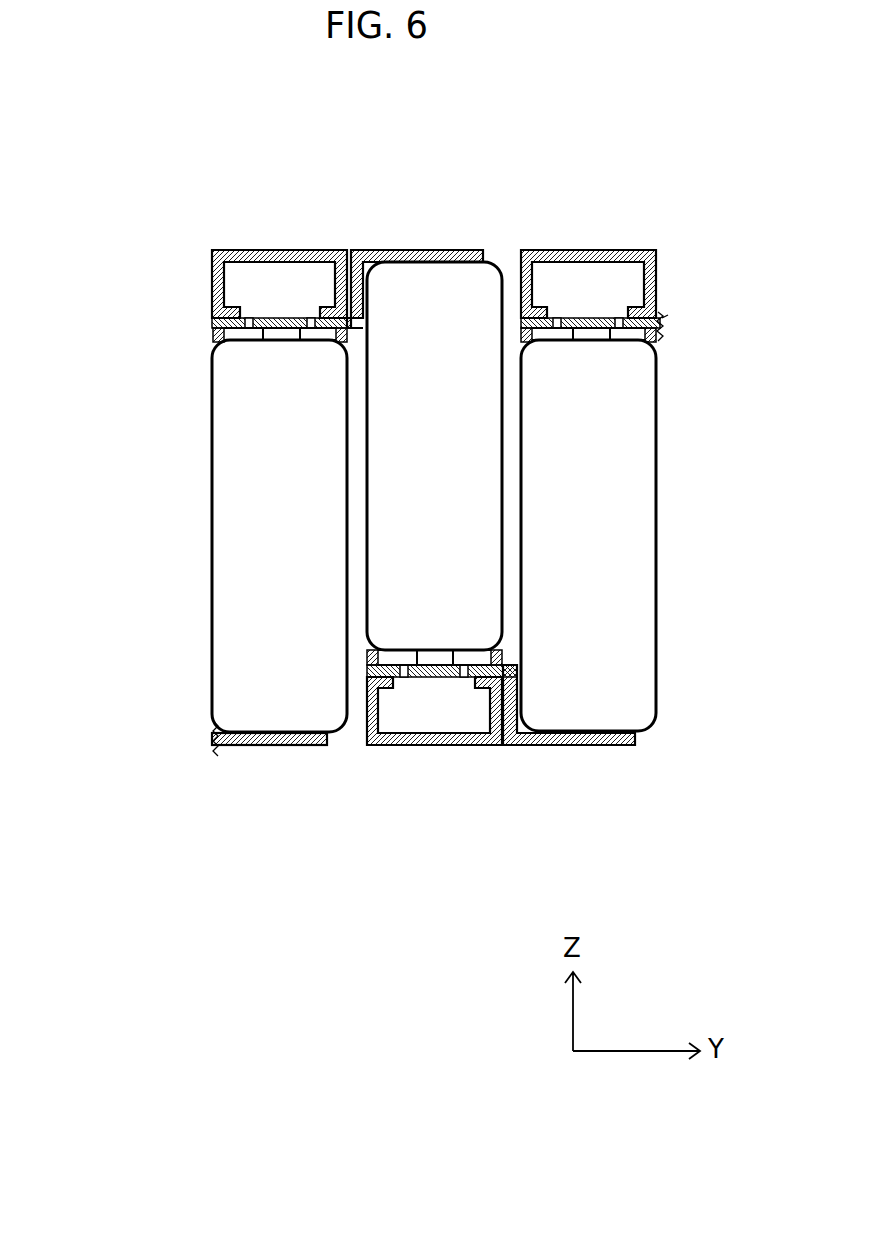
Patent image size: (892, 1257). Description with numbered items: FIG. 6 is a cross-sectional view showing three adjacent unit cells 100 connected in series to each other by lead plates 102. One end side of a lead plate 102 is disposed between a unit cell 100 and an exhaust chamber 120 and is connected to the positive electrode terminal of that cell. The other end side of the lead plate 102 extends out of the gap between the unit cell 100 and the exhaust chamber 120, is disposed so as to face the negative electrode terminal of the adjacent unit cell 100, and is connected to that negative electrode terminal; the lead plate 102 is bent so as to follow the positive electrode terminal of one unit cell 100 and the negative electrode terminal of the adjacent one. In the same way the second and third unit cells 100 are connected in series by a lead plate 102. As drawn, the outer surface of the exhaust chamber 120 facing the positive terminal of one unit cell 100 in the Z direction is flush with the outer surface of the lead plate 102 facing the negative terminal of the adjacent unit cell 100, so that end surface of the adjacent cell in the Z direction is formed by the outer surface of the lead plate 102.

The unit cell 100 is at (213, 418).
The exhaust chamber 120 is at (212, 260).
The lead plate 102 is at (212, 320).